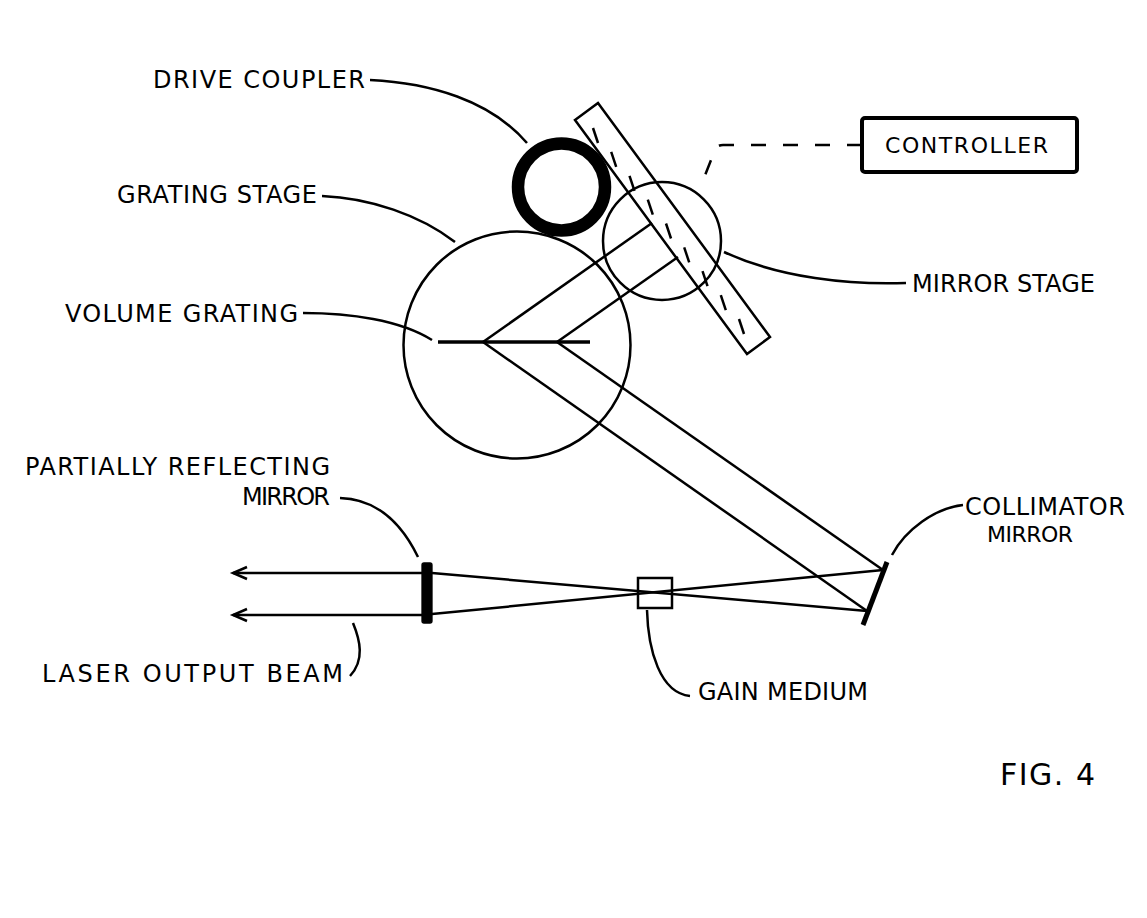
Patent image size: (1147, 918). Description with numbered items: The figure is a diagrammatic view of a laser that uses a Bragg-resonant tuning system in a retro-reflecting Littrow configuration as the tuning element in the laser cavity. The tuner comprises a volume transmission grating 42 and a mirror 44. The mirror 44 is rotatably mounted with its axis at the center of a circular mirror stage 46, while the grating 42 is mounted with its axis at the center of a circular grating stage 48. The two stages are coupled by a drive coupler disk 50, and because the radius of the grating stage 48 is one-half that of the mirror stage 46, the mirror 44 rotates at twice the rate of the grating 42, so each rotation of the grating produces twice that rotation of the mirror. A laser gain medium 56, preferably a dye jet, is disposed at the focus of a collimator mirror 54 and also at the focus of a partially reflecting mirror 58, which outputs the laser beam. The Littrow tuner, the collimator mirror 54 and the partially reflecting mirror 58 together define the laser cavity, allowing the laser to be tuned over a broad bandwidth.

The volume transmission grating 42 is at (442, 333).
The mirror 44 is at (758, 353).
The mirror stage 46 is at (723, 218).
The grating stage 48 is at (500, 462).
The drive coupler disk 50 is at (506, 188).
The collimator mirror 54 is at (868, 625).
The laser gain medium 56 is at (647, 577).
The partially reflecting mirror 58 is at (423, 630).